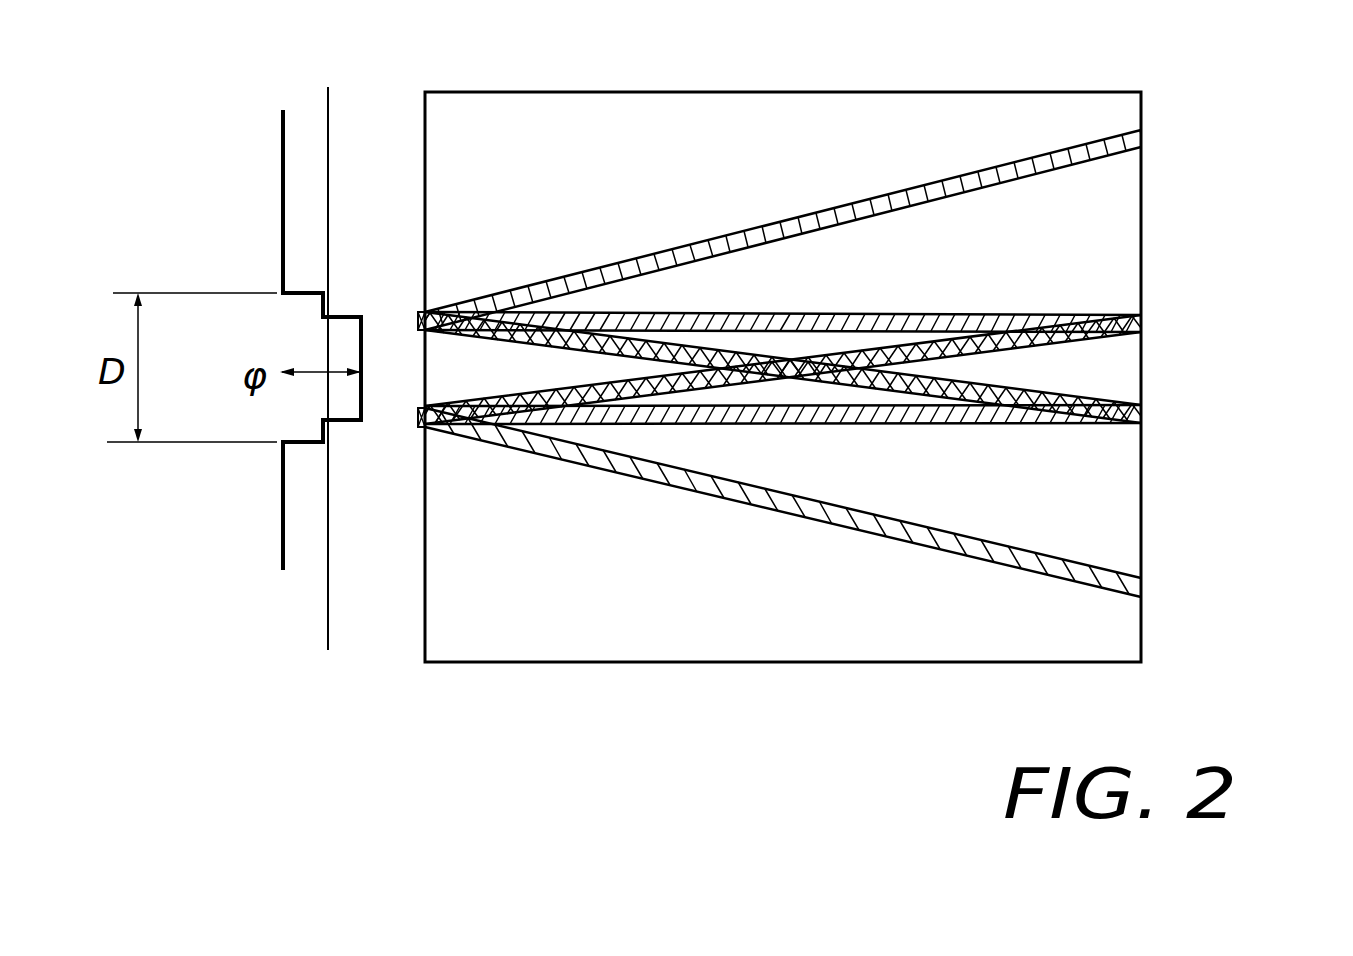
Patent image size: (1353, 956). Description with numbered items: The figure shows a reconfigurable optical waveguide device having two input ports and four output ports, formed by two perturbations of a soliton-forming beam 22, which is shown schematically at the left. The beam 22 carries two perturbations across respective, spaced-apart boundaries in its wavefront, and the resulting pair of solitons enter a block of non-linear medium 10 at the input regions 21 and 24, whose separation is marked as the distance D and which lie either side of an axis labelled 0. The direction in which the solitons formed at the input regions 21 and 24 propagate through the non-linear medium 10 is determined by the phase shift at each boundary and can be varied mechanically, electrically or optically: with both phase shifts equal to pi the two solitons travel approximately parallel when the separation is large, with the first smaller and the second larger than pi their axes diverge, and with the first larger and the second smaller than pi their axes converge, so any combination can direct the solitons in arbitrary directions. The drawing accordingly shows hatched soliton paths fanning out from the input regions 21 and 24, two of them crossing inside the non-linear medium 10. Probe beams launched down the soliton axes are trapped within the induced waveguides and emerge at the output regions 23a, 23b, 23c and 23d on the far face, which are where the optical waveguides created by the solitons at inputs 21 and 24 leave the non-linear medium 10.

The non-linear medium 10 is at (683, 638).
The soliton-forming beam 22 is at (264, 159).
The optical axis 0 is at (339, 350).
The input region 21 is at (418, 318).
The input region 24 is at (417, 418).
The output region 23a is at (1147, 138).
The output region 23b is at (1147, 318).
The output region 23c is at (1148, 412).
The output region 23d is at (1150, 588).